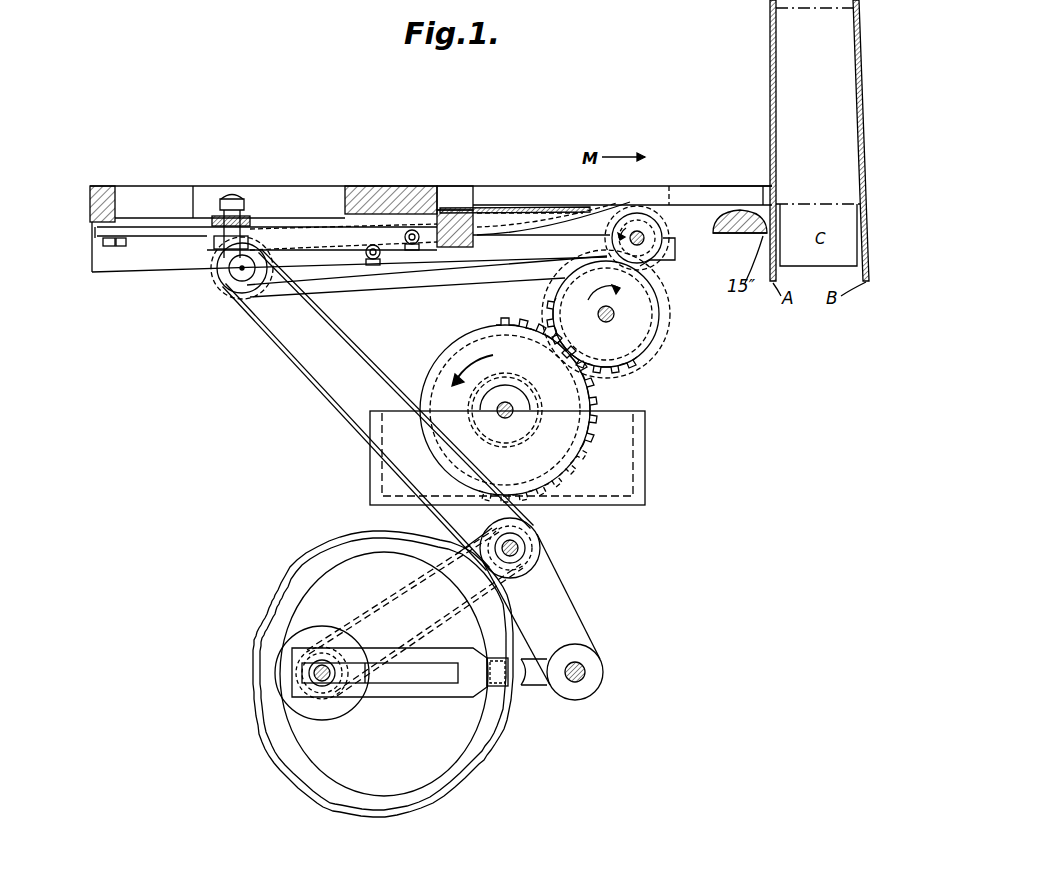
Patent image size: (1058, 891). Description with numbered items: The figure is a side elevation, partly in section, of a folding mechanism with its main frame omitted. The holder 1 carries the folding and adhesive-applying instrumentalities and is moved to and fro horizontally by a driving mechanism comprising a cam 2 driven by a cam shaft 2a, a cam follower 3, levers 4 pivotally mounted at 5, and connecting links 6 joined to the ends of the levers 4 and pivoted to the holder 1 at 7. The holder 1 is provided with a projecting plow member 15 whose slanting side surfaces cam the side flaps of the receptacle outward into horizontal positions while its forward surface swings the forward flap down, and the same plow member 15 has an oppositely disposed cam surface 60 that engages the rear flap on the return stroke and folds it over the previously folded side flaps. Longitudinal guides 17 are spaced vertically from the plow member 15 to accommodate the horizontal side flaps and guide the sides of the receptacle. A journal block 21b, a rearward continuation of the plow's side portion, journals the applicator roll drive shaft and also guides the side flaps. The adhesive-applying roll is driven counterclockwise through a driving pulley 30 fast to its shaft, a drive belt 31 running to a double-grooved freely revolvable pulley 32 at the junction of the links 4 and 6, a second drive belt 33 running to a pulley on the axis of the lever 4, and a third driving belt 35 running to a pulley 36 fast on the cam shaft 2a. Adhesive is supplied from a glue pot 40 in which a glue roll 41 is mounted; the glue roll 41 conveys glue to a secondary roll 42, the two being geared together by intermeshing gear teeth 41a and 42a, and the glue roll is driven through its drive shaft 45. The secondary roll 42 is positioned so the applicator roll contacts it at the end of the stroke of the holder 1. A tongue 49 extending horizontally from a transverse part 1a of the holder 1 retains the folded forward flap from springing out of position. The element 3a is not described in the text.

The holder 1 is at (118, 187).
The transverse part of the holder 1a is at (418, 190).
The tongue 49 is at (530, 207).
The pivot of connecting links to holder 7 is at (641, 231).
The cam surface 60 is at (718, 215).
The longitudinal guides 17 is at (731, 186).
The projecting plow member 15 is at (731, 238).
The journal block 21b is at (676, 258).
The driving pulley 30 is at (670, 280).
The double-grooved pulley 32 is at (220, 289).
The connecting links 6 is at (325, 272).
The drive belt 31 is at (392, 287).
The second drive belt 33 is at (322, 383).
The glue roll 41 is at (480, 347).
The secondary roll 42 is at (573, 292).
The drive shaft of the glue roll 45 is at (497, 408).
The gear teeth 42a is at (643, 372).
The gear teeth 41a is at (592, 401).
The glue pot 40 is at (642, 452).
The third driving belt 35 is at (455, 548).
The lever pivot 5 is at (522, 548).
The pulley shaft 3a is at (525, 556).
The levers 4 is at (560, 579).
The cam follower 3 is at (505, 690).
The cam shaft 2a is at (316, 673).
The pulley 36 is at (272, 697).
The cam 2 is at (383, 674).